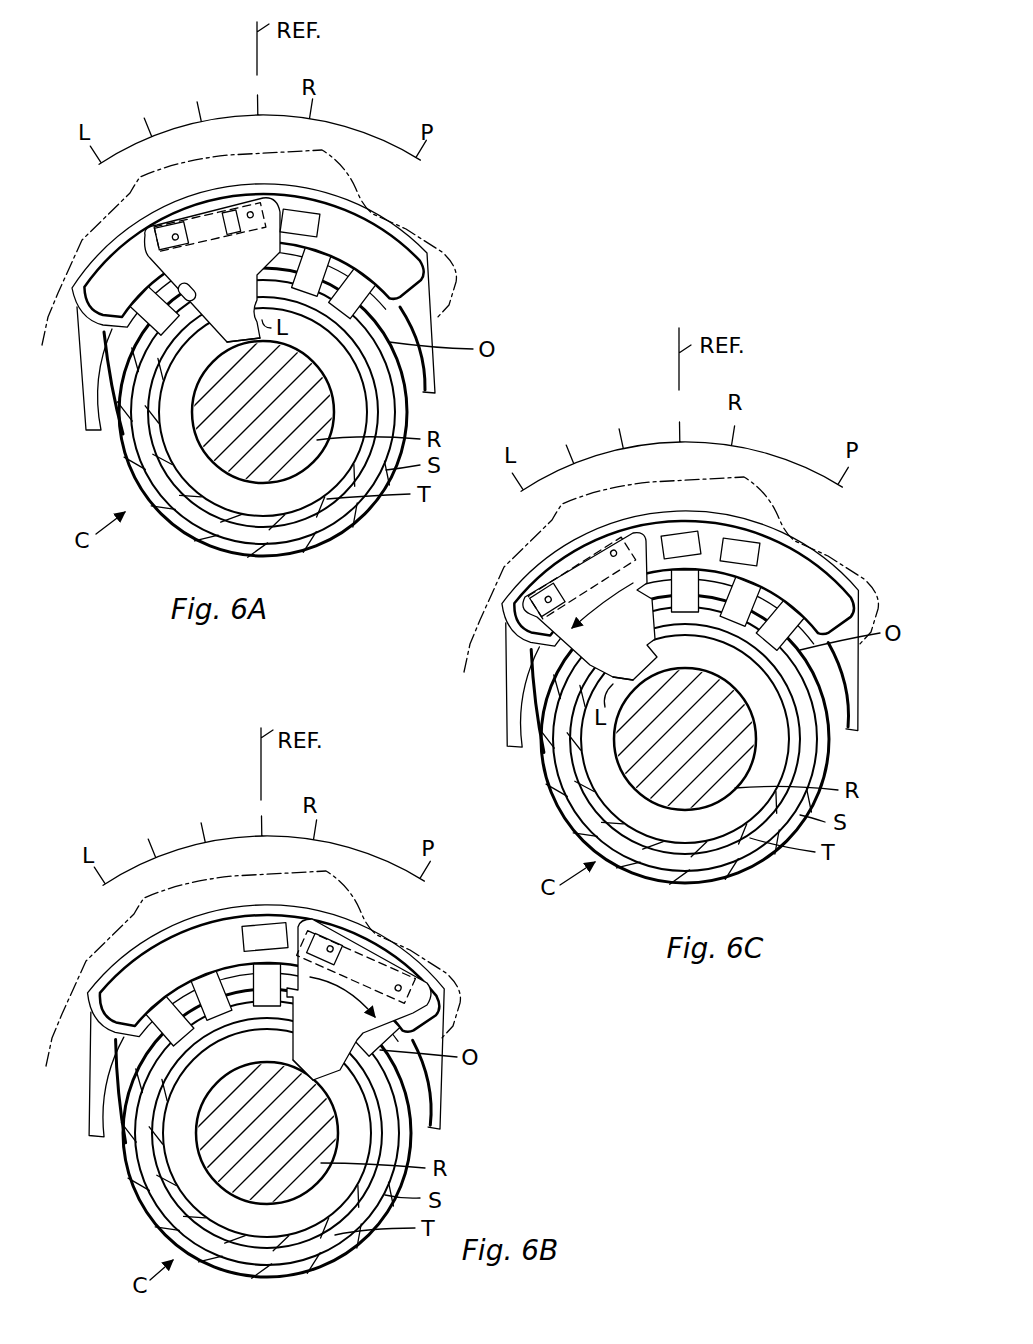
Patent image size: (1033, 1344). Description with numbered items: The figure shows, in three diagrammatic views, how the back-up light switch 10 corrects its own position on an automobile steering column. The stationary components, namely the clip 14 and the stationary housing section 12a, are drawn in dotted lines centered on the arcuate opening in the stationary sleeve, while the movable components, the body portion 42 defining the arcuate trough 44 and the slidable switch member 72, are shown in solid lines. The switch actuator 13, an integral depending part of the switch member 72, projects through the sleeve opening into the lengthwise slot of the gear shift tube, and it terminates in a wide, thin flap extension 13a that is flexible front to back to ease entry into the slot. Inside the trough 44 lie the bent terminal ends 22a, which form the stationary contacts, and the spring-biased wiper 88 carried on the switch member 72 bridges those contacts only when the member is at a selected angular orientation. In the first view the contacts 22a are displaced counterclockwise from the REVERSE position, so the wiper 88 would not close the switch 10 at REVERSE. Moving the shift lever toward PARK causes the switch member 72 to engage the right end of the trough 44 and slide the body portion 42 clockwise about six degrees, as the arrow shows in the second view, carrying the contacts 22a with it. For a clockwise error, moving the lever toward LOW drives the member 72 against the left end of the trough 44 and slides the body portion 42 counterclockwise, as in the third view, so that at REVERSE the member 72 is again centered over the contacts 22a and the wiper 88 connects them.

In FIG. 6A, the switch 10 is at (514, 274).
In FIG. 6B, the switch 10 is at (475, 958).
In FIG. 6C, the switch 10 is at (645, 433).
In FIG. 6A, the stationary housing section 12a is at (270, 345).
In FIG. 6B, the stationary housing section 12a is at (57, 975).
In FIG. 6C, the stationary housing section 12a is at (462, 578).
In FIG. 6A, the switch actuator 13 is at (212, 270).
In FIG. 6B, the switch actuator 13 is at (359, 999).
In FIG. 6C, the switch actuator 13 is at (590, 606).
In FIG. 6A, the flap extension 13a is at (208, 369).
In FIG. 6B, the flap extension 13a is at (266, 1057).
In FIG. 6C, the flap extension 13a is at (663, 659).
In FIG. 6A, the clip 14 is at (249, 215).
In FIG. 6B, the clip 14 is at (253, 933).
In FIG. 6C, the clip 14 is at (671, 531).
In FIG. 6A, the terminal inner ends 22a is at (370, 208).
In FIG. 6B, the terminal inner ends 22a is at (344, 922).
In FIG. 6C, the terminal inner ends 22a is at (758, 533).
In FIG. 6A, the body portion 42 is at (276, 288).
In FIG. 6B, the body portion 42 is at (259, 1009).
In FIG. 6C, the body portion 42 is at (695, 615).
In FIG. 6A, the trough 44 is at (289, 255).
In FIG. 6B, the trough 44 is at (268, 971).
In FIG. 6C, the trough 44 is at (712, 582).
In FIG. 6A, the switch member 72 is at (115, 243).
In FIG. 6B, the switch member 72 is at (410, 979).
In FIG. 6C, the switch member 72 is at (490, 604).
In FIG. 6A, the wiper 88 is at (165, 216).
In FIG. 6B, the wiper 88 is at (386, 959).
In FIG. 6C, the wiper 88 is at (544, 575).